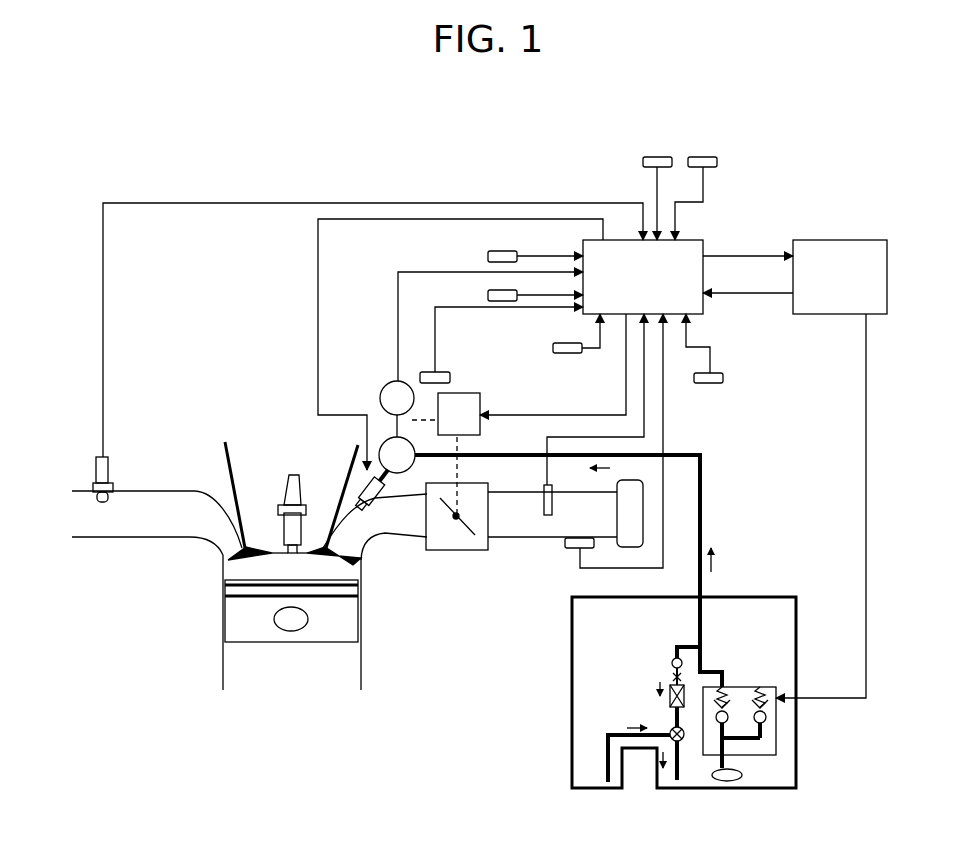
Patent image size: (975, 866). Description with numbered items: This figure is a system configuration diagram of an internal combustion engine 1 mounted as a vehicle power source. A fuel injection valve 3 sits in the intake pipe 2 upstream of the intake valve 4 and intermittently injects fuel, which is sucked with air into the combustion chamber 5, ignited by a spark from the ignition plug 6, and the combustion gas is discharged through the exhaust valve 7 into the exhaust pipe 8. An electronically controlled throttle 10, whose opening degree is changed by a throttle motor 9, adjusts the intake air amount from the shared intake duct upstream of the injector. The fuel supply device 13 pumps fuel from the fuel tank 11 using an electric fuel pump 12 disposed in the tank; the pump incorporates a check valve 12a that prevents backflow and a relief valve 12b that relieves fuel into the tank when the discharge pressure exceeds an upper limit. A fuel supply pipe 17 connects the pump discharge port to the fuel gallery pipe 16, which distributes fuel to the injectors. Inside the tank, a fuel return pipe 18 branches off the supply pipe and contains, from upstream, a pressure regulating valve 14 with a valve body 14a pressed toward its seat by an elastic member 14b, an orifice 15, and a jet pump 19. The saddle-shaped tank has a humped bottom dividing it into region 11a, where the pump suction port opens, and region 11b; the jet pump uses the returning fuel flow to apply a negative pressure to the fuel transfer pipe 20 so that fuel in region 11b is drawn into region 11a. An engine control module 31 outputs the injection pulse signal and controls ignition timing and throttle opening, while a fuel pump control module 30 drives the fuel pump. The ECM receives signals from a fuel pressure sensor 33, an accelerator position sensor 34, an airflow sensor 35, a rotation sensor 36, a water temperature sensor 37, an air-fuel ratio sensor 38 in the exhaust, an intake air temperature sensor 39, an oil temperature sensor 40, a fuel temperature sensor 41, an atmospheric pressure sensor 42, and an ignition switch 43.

The internal combustion engine 1 is at (240, 400).
The intake pipe 2 is at (364, 518).
The fuel injection valve 3 is at (376, 506).
The intake valve 4 is at (330, 545).
The combustion chamber 5 is at (242, 572).
The ignition plug 6 is at (289, 498).
The exhaust valve 7 is at (243, 540).
The exhaust pipe 8 is at (170, 491).
The throttle motor 9 is at (462, 393).
The electronically controlled throttle 10 is at (468, 550).
The fuel tank 11 is at (778, 596).
The region 11a is at (765, 779).
The region 11b is at (585, 781).
The fuel pump 12 is at (784, 547).
The check valve 12a is at (722, 687).
The relief valve 12b is at (762, 688).
The fuel supply device 13 is at (772, 540).
The pressure regulating valve 14 is at (576, 653).
The valve body 14a is at (665, 660).
The elastic member 14b is at (672, 677).
The orifice 15 is at (668, 706).
The fuel gallery pipe 16 is at (384, 442).
The fuel supply pipe 17 is at (700, 453).
The fuel return pipe 18 is at (677, 645).
The jet pump 19 is at (684, 750).
The fuel transfer pipe 20 is at (605, 743).
The fuel pump control module (FPCM) 30 is at (840, 240).
The engine control module (ECM) 31 is at (703, 240).
The fuel pressure sensor 33 is at (386, 386).
The accelerator position sensor 34 is at (488, 256).
The airflow sensor 35 is at (544, 500).
The rotation sensor 36 is at (488, 295).
The water temperature sensor 37 is at (555, 353).
The air-fuel ratio sensor 38 is at (113, 485).
The intake air temperature sensor 39 is at (565, 546).
The oil temperature sensor 40 is at (717, 167).
The fuel temperature sensor 41 is at (432, 372).
The atmospheric pressure sensor 42 is at (723, 380).
The ignition switch 43 is at (643, 162).